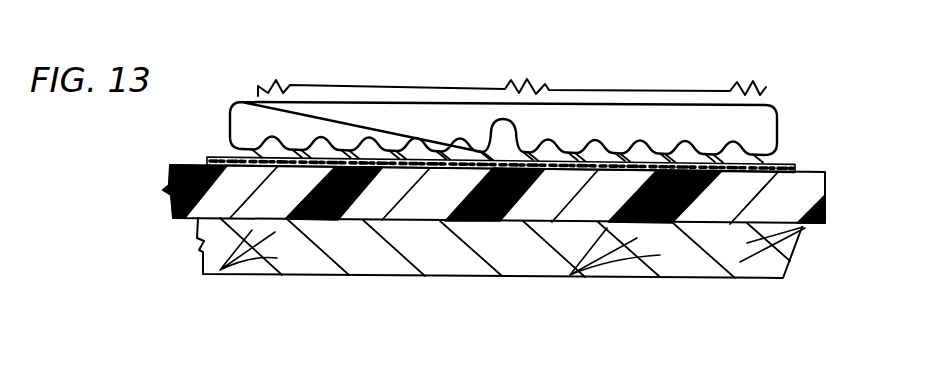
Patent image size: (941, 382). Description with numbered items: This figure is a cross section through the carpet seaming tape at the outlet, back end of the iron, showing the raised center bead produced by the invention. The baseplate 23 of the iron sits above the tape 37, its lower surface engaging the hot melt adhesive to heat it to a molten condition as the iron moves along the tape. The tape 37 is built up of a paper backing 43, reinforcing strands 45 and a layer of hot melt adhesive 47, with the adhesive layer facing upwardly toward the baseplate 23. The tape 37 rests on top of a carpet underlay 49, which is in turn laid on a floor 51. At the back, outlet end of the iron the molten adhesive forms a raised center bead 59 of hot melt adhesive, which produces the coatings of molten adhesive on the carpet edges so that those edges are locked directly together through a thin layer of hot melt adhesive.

The baseplate 23 is at (765, 115).
The tape 37 is at (806, 155).
The paper backing 43 is at (402, 156).
The reinforcing strands 45 is at (556, 151).
The layer of hot melt adhesive 47 is at (638, 149).
The carpet underlay 49 is at (788, 197).
The floor 51 is at (775, 243).
The raised center bead 59 is at (506, 129).